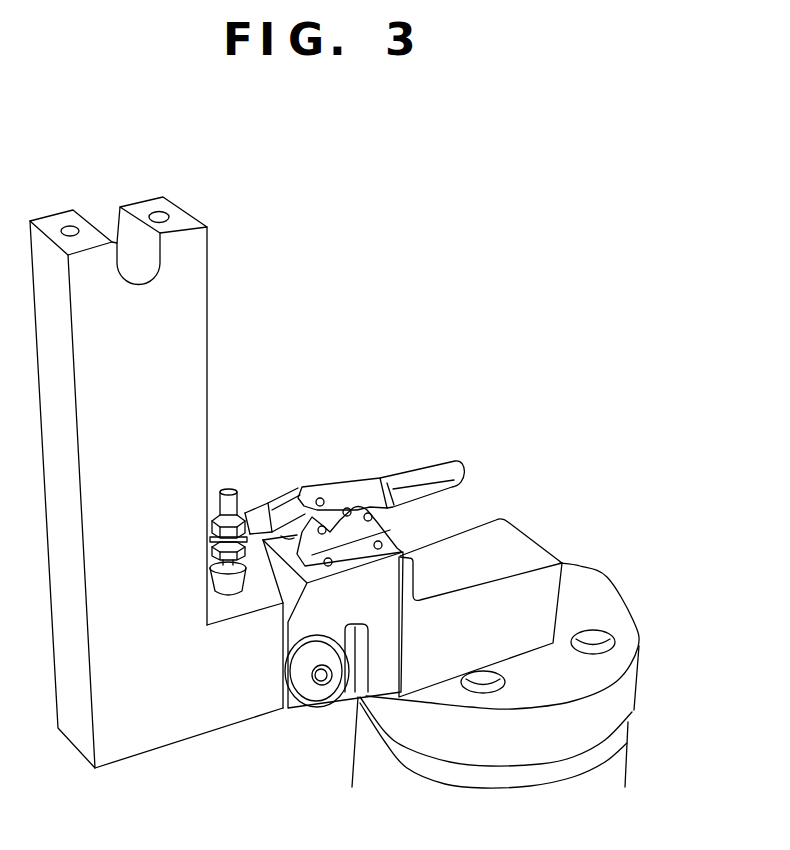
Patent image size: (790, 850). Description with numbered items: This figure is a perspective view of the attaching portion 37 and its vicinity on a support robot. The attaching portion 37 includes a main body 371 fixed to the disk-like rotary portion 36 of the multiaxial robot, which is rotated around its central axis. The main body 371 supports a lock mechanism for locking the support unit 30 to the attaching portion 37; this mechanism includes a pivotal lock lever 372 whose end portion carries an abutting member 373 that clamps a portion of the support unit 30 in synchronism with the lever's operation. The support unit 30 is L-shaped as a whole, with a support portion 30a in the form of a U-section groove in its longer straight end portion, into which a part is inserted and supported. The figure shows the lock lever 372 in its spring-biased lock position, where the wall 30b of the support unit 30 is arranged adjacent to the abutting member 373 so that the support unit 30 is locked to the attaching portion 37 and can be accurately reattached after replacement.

The support unit 30 is at (207, 363).
The support portion 30a is at (110, 228).
The wall 30b is at (255, 605).
The rotary portion 36 is at (610, 603).
The attaching portion 37 is at (552, 500).
The main body 371 is at (483, 525).
The lock lever 372 is at (396, 467).
The abutting member 373 is at (221, 590).